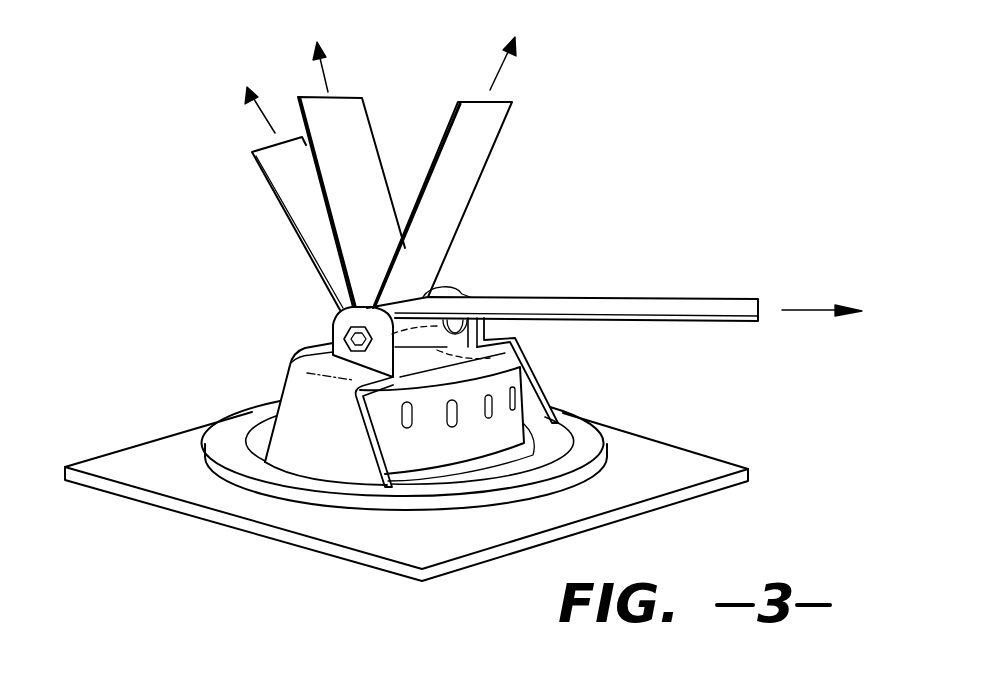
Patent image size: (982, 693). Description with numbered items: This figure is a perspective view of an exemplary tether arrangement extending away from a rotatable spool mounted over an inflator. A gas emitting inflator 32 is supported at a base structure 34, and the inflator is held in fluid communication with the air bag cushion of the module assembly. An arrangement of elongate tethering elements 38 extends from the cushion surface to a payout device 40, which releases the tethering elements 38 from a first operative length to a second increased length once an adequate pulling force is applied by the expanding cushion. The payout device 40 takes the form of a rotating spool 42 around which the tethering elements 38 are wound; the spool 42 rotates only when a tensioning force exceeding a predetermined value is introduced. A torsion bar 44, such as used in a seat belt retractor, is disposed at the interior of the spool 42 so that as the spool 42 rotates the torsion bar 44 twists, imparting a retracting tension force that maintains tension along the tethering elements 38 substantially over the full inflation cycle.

The gas emitting inflator 32 is at (518, 352).
The base structure 34 is at (657, 455).
The tethering elements 38 is at (370, 118).
The payout device 40 is at (322, 333).
The rotating spool 42 is at (478, 335).
The torsion bar 44 is at (522, 343).